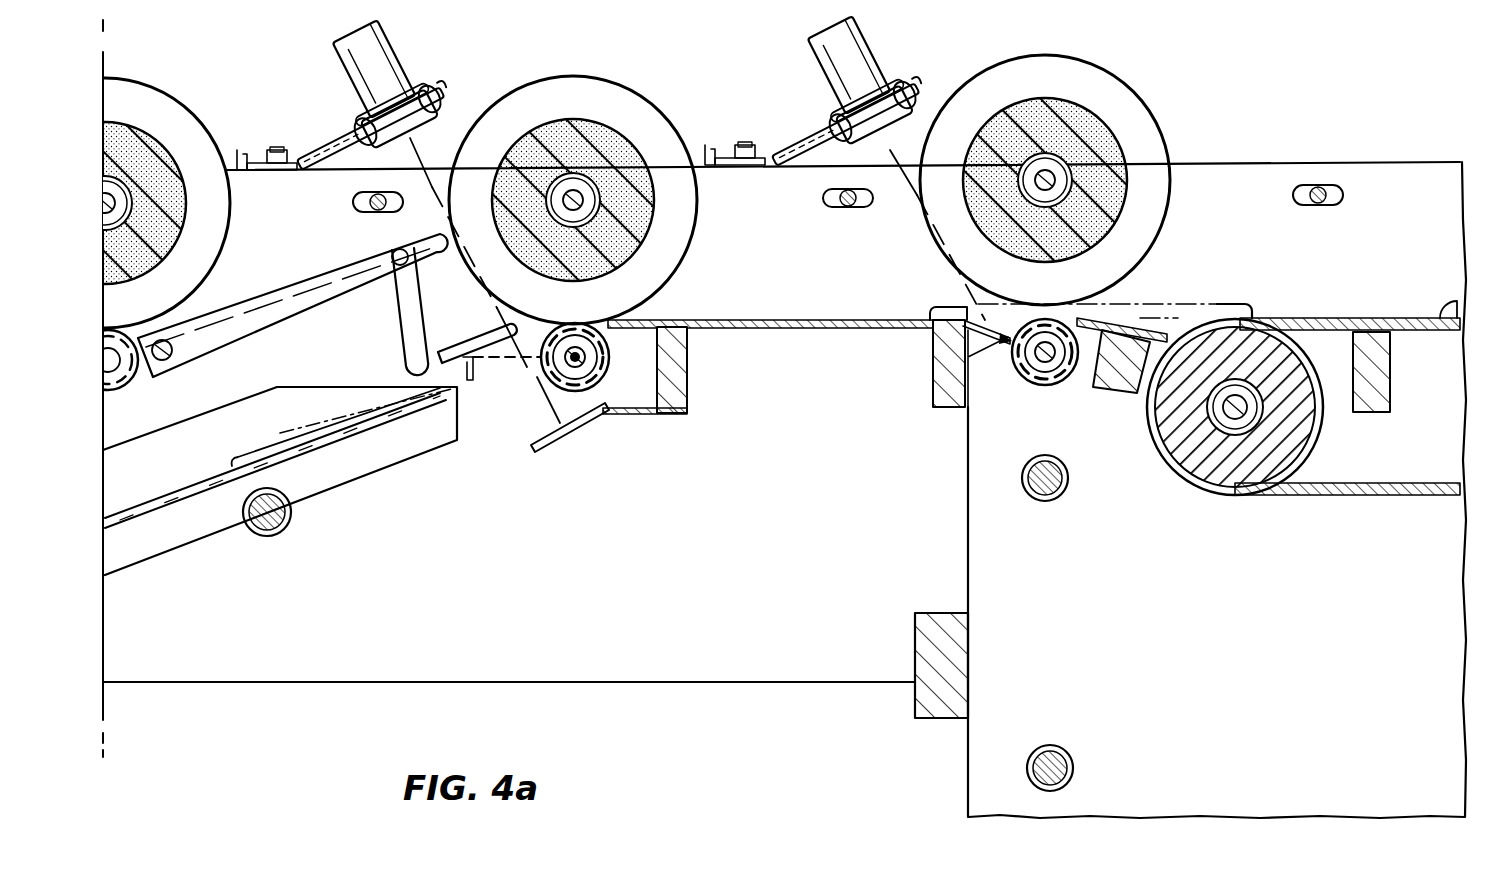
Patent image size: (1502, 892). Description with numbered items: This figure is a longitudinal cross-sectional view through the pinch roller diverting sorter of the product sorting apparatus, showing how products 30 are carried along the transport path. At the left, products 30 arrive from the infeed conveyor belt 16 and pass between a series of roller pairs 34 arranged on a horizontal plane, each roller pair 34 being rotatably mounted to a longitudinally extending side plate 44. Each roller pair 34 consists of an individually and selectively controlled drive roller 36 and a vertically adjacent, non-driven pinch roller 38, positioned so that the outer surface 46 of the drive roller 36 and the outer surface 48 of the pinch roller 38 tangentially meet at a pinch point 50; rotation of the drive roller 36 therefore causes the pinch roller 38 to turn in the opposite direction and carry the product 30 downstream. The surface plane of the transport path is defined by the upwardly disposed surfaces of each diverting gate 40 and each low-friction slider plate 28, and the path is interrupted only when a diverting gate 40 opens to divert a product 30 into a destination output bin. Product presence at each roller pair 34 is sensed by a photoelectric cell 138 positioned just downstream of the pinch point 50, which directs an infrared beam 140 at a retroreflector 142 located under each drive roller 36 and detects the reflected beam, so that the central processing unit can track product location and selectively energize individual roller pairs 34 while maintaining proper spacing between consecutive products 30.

The infeed conveyor belt 16 is at (1457, 302).
The low-friction slider plate 28 is at (822, 328).
The product 30 is at (440, 355).
The roller pair 34 is at (1082, 50).
The drive roller 36 is at (595, 378).
The pinch roller 38 is at (630, 100).
The diverting gate 40 is at (283, 290).
The side plate 44 is at (828, 683).
The outer surface of drive roller 46 is at (606, 366).
The outer surface of pinch roller 48 is at (527, 83).
The pinch point 50 is at (582, 306).
The photoelectric cell 138 is at (870, 45).
The infrared beam 140 is at (901, 194).
The retroreflector 142 is at (540, 455).